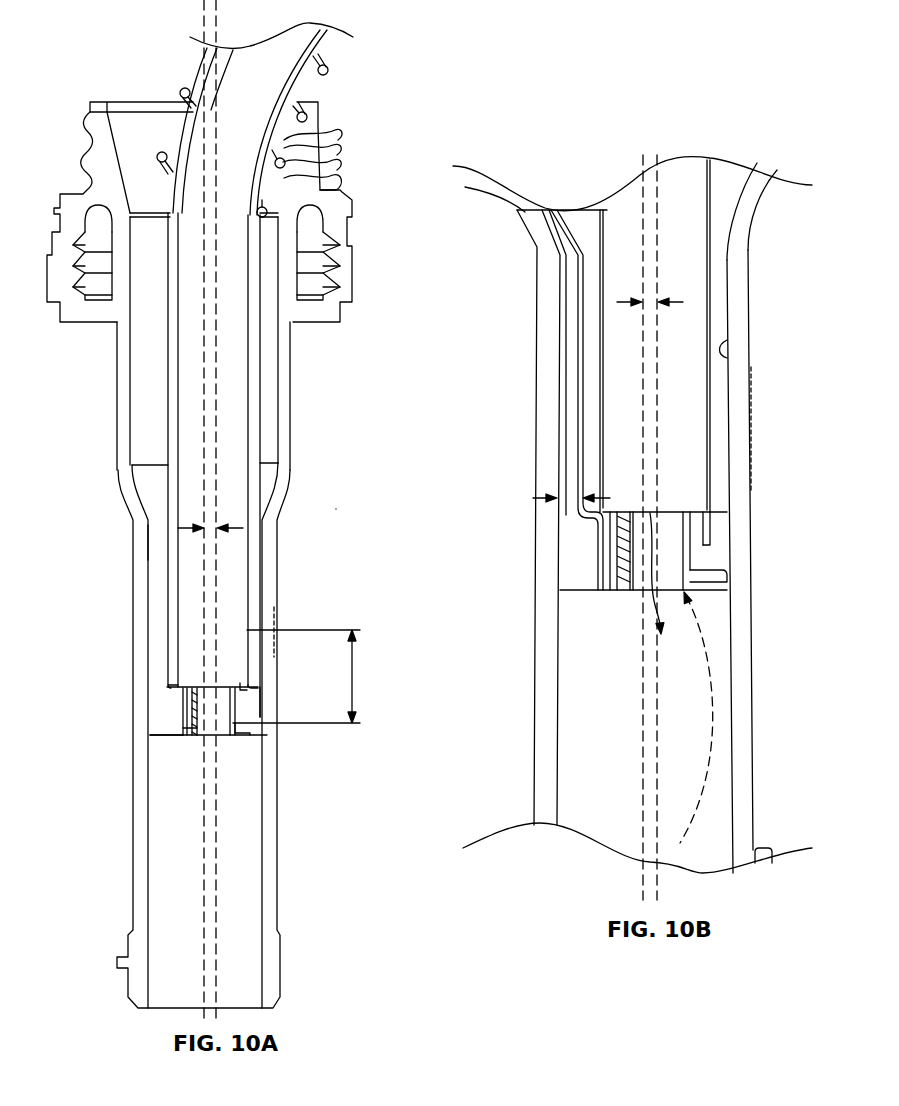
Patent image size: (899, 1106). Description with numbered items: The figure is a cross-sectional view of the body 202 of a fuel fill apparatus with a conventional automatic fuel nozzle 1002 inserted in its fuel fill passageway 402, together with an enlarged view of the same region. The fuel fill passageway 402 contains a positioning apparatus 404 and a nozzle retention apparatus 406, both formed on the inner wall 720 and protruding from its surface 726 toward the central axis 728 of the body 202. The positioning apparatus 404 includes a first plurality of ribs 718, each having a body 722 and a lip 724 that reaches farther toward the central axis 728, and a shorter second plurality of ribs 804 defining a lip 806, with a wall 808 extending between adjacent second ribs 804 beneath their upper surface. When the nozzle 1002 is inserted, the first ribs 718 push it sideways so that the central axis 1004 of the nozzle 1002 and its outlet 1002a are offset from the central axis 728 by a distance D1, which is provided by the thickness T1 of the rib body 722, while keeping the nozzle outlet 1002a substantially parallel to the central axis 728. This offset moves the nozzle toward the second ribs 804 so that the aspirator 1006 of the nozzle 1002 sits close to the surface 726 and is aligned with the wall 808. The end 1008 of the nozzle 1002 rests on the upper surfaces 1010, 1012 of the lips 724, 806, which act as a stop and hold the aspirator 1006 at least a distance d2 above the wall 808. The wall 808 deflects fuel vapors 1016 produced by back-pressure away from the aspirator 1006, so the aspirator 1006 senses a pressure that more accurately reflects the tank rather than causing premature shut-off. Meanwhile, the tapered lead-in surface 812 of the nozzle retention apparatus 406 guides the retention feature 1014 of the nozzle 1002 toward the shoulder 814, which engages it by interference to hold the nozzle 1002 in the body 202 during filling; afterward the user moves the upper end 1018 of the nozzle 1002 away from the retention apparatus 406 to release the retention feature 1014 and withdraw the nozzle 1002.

In FIG. 10A, the body 202 is at (390, 57).
In FIG. 10B, the body 202 is at (468, 281).
In FIG. 10A, the fuel fill passageway 402 is at (128, 132).
In FIG. 10B, the fuel fill passageway 402 is at (570, 222).
In FIG. 10A, the positioning apparatus 404 is at (146, 682).
In FIG. 10B, the positioning apparatus 404 is at (572, 607).
In FIG. 10A, the nozzle retention apparatus 406 is at (320, 140).
In FIG. 10A, the first plurality of ribs 718 is at (187, 728).
In FIG. 10A, the inner wall 720 is at (148, 588).
In FIG. 10B, the inner wall 720 is at (727, 277).
In FIG. 10B, the body of the first plurality of ribs 722 is at (550, 310).
In FIG. 10A, the lip of the first plurality of ribs 724 is at (187, 735).
In FIG. 10B, the lip of the first plurality of ribs 724 is at (587, 542).
In FIG. 10A, the surface of the inner wall 726 is at (140, 556).
In FIG. 10B, the surface of the inner wall 726 is at (727, 345).
In FIG. 10A, the central axis of the body 728 is at (204, 875).
In FIG. 10B, the central axis of the body 728 is at (643, 728).
In FIG. 10A, the second plurality of ribs 804 is at (340, 504).
In FIG. 10A, the lip of the second plurality of ribs 806 is at (240, 713).
In FIG. 10B, the lip of the second plurality of ribs 806 is at (697, 553).
In FIG. 10A, the wall 808 is at (250, 733).
In FIG. 10B, the wall 808 is at (720, 585).
In FIG. 10A, the tapered lead-in surface 812 is at (316, 128).
In FIG. 10A, the shoulder 814 is at (286, 162).
In FIG. 10A, the fuel nozzle 1002 is at (255, 437).
In FIG. 10B, the fuel nozzle 1002 is at (713, 310).
In FIG. 10A, the fuel nozzle outlet 1002a is at (218, 690).
In FIG. 10B, the fuel nozzle outlet 1002a is at (677, 510).
In FIG. 10A, the central axis of the nozzle 1004 is at (218, 902).
In FIG. 10B, the central axis of the nozzle 1004 is at (657, 873).
In FIG. 10A, the aspirator 1006 is at (252, 627).
In FIG. 10B, the aspirator 1006 is at (717, 420).
In FIG. 10A, the end of the nozzle 1008 is at (187, 716).
In FIG. 10B, the end of the nozzle 1008 is at (717, 513).
In FIG. 10A, the upper surface of the first lip 1010 is at (197, 683).
In FIG. 10B, the upper surface of the first lip 1010 is at (623, 512).
In FIG. 10A, the upper surface of the second lip 1012 is at (240, 688).
In FIG. 10B, the upper surface of the second lip 1012 is at (697, 513).
In FIG. 10A, the retention feature 1014 is at (312, 172).
In FIG. 10B, the fuel vapors 1016 is at (723, 700).
In FIG. 10A, the upper end of the nozzle 1018 is at (318, 50).
In FIG. 10A, the offset distance D1 is at (237, 523).
In FIG. 10B, the offset distance D1 is at (627, 300).
In FIG. 10A, the distance above the wall d2 is at (367, 672).
In FIG. 10B, the thickness of the rib body T1 is at (543, 500).